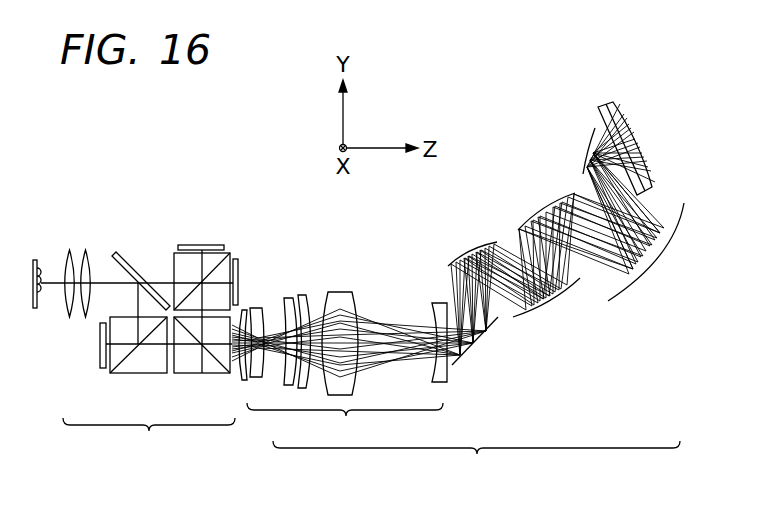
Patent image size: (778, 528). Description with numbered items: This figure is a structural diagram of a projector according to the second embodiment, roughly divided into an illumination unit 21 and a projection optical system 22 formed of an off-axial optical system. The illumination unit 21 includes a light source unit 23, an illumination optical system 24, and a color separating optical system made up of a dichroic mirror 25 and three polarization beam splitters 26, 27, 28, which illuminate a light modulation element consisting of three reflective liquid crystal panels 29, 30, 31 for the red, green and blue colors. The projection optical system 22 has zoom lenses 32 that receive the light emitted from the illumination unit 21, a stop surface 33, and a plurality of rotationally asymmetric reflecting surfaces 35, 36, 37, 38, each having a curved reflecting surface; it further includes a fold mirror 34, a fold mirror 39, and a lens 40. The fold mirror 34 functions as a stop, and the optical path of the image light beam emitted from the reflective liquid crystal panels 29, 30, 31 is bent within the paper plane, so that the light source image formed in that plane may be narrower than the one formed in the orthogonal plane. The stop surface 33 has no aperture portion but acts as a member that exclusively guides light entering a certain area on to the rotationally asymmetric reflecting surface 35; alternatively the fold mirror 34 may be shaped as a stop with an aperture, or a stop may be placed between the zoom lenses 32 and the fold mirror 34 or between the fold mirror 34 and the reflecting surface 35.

The illumination unit 21 is at (149, 436).
The projection optical system 22 is at (456, 291).
The light source unit 23 is at (35, 259).
The illumination optical system 24 is at (78, 250).
The dichroic mirror 25 is at (121, 254).
The polarization beam splitter 26 is at (133, 374).
The polarization beam splitter 27 is at (231, 257).
The polarization beam splitter 28 is at (205, 374).
The reflective liquid crystal panel 29 is at (100, 353).
The reflective liquid crystal panel 30 is at (195, 244).
The reflective liquid crystal panel 31 is at (240, 268).
The zoom lenses 32 is at (341, 365).
The stop surface 33 is at (468, 352).
The fold mirror 34 is at (490, 335).
The rotationally asymmetric reflecting surface 35 is at (467, 260).
The rotationally asymmetric reflecting surface 36 is at (567, 290).
The rotationally asymmetric reflecting surface 37 is at (537, 222).
The rotationally asymmetric reflecting surface 38 is at (661, 263).
The fold mirror 39 is at (588, 157).
The lens 40 is at (603, 106).